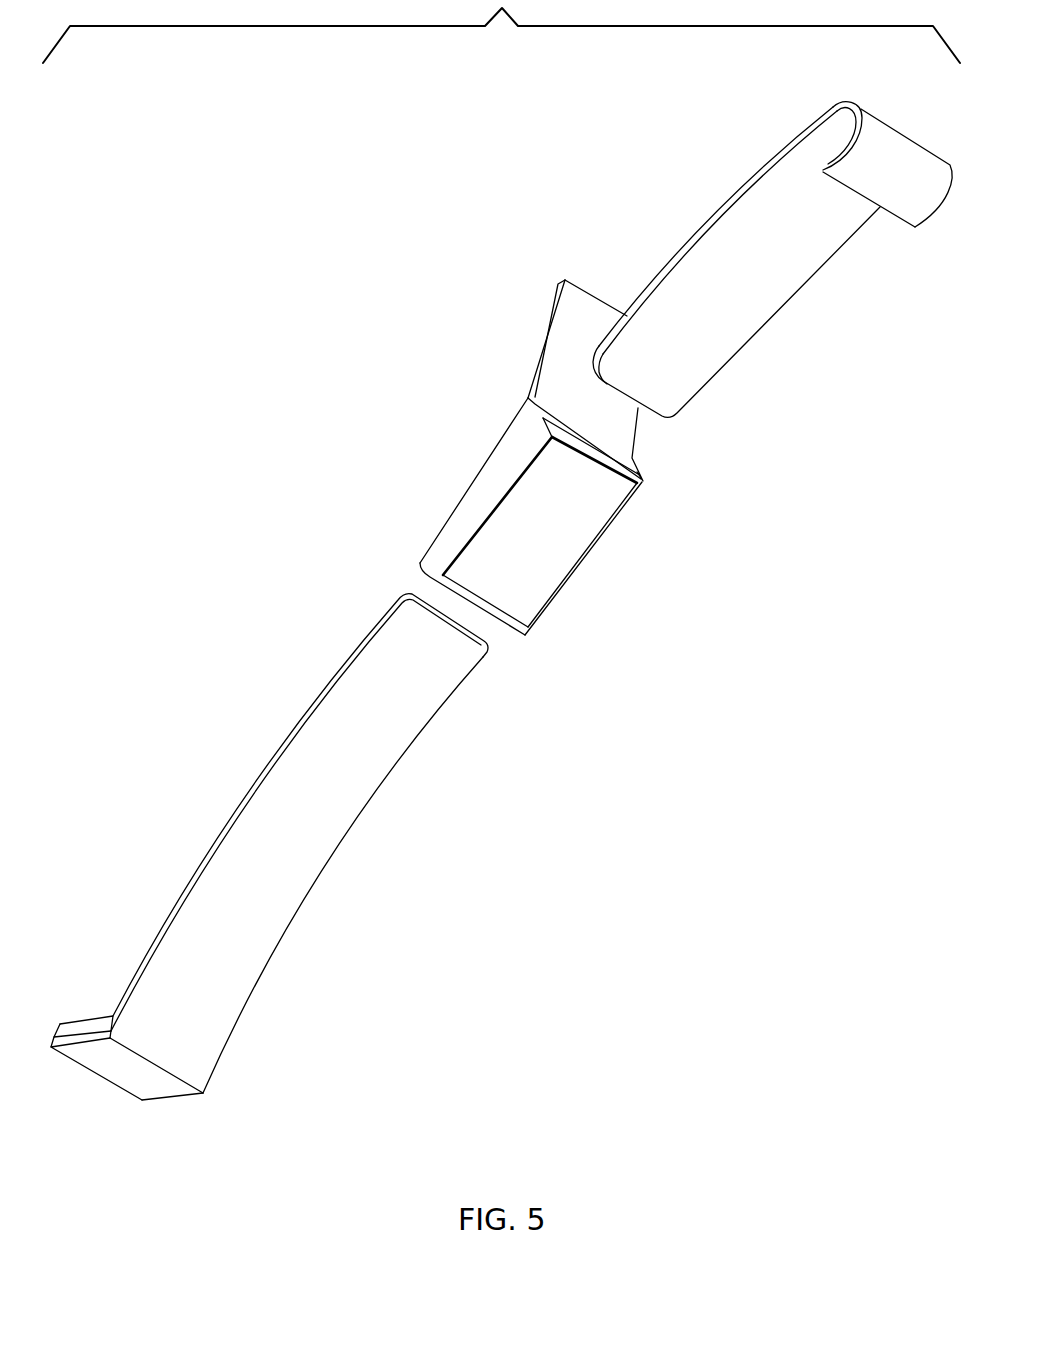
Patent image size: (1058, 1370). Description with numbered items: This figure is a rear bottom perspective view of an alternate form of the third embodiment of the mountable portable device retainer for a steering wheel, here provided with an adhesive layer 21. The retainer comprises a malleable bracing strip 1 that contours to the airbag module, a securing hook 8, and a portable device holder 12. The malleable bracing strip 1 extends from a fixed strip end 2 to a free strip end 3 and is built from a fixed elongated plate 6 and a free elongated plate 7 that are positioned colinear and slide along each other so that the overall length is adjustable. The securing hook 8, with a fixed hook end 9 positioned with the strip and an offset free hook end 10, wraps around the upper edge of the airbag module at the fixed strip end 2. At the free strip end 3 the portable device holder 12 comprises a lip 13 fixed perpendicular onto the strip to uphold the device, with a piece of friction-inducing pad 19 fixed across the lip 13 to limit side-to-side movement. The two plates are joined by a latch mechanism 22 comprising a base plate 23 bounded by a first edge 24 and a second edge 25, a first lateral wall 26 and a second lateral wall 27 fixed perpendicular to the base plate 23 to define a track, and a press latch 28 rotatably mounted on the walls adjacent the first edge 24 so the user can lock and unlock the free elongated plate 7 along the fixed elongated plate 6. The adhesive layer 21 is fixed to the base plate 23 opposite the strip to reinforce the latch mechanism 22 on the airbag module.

The malleable bracing strip 1 is at (734, 179).
The fixed strip end 2 is at (817, 126).
The free strip end 3 is at (205, 1094).
The fixed elongated plate 6 is at (692, 224).
The free elongated plate 7 is at (242, 774).
The securing hook 8 is at (883, 253).
The fixed hook end 9 is at (834, 117).
The free hook end 10 is at (913, 222).
The portable device holder 12 is at (97, 1101).
The lip 13 is at (157, 1110).
The piece of friction-inducing pad 19 is at (72, 1013).
The adhesive layer 21 is at (545, 623).
The latch mechanism 22 is at (468, 421).
The base plate 23 is at (584, 581).
The first edge 24 is at (643, 488).
The second edge 25 is at (525, 637).
The first lateral wall 26 is at (645, 478).
The second lateral wall 27 is at (428, 550).
The press latch 28 is at (580, 288).